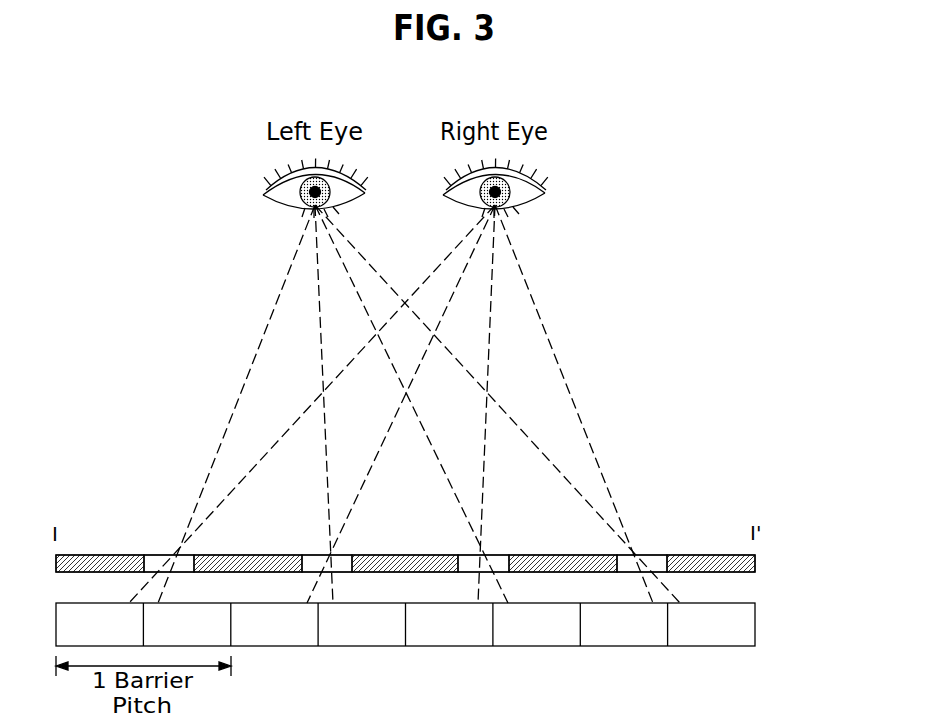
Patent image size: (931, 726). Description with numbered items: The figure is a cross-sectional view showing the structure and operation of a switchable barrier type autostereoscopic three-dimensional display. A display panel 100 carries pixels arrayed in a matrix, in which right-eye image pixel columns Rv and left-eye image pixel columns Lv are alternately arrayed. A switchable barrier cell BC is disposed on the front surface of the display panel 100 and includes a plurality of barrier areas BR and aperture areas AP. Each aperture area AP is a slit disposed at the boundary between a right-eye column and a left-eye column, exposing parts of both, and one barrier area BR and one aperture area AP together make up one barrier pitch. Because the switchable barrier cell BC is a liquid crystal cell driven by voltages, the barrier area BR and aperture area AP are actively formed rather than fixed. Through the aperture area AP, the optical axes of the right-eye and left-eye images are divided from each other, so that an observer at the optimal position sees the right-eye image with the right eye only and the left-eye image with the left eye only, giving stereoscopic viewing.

The aperture area AP is at (655, 560).
The barrier area BR is at (722, 562).
The switchable barrier cell BC is at (443, 536).
The display panel 100 is at (755, 624).